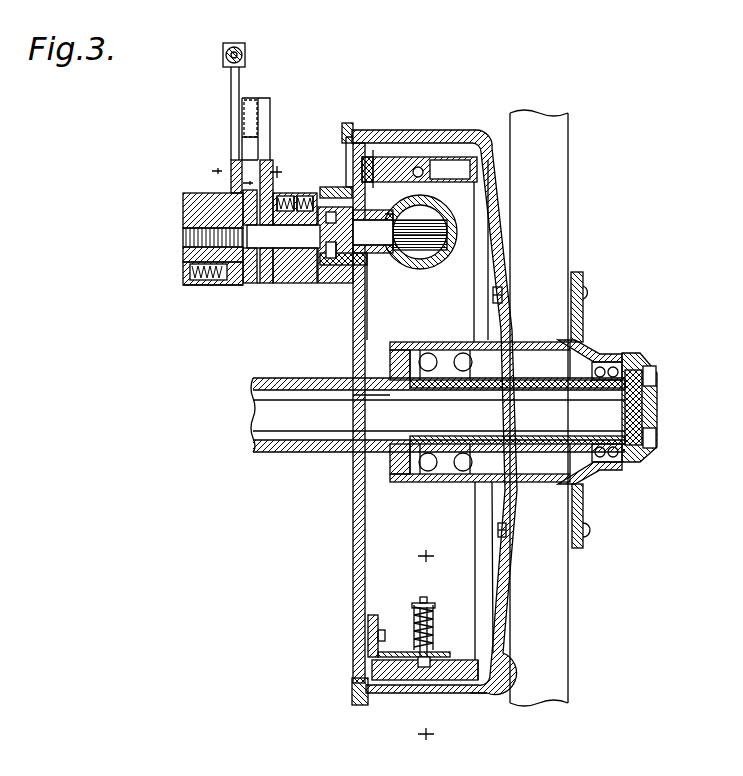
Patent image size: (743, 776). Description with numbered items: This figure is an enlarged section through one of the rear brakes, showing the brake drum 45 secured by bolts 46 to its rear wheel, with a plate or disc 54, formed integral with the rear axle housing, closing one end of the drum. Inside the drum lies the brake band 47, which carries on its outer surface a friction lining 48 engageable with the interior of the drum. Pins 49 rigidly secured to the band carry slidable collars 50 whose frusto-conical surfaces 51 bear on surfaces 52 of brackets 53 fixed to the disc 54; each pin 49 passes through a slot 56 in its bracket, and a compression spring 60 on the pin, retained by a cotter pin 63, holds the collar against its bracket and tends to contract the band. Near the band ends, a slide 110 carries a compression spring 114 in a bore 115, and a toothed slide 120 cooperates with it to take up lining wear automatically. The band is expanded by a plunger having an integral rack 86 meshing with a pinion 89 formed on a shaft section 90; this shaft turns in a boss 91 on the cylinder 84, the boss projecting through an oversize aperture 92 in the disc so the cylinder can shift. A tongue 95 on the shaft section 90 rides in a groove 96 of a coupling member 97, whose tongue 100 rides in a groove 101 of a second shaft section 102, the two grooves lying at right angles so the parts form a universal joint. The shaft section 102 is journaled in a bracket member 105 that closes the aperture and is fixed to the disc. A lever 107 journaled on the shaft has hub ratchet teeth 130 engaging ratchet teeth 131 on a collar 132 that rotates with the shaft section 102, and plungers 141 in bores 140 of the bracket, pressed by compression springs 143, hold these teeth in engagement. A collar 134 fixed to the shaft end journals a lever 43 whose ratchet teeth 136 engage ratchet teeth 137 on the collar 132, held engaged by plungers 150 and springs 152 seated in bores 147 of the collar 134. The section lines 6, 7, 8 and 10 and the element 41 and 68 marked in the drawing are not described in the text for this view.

The section line 6 is at (278, 320).
The section line 7 is at (250, 316).
The section line 8 is at (232, 313).
The section line 10 is at (426, 646).
The adjusting nut 41 is at (234, 43).
The lever 43 is at (231, 77).
The drum 45 is at (503, 213).
The bolts 46 is at (590, 294).
The brake band 47 is at (378, 680).
The brake or friction lining 48 is at (480, 690).
The pins 49 is at (433, 612).
The collars 50 is at (430, 650).
The frusto-conical surfaces 51 is at (420, 680).
The surfaces 52 is at (455, 680).
The brackets 53 is at (365, 632).
The plate or disc 54 is at (354, 514).
The slot 56 is at (404, 652).
The compression spring 60 is at (414, 612).
The cotter pin 63 is at (423, 597).
The washer 68 is at (430, 603).
The cylinder 84 is at (430, 247).
The rack 86 is at (430, 214).
The pinion 89 is at (420, 243).
The shaft section 90 is at (386, 258).
The boss 91 is at (388, 216).
The aperture 92 is at (368, 262).
The tongue 95 is at (356, 233).
The groove 96 is at (370, 215).
The coupling member 97 is at (384, 250).
The tongue 100 is at (333, 258).
The groove 101 is at (336, 258).
The shaft section 102 is at (304, 228).
The bracket member 105 is at (332, 187).
The lever 107 is at (270, 100).
The slide 110 is at (385, 170).
The compression spring 114 is at (418, 167).
The bore 115 is at (450, 166).
The slide 120 is at (374, 157).
The ratchet teeth 130 is at (266, 283).
The ratchet teeth 131 is at (255, 288).
The collar 132 is at (247, 272).
The collar 134 is at (188, 215).
The ratchet teeth 136 is at (186, 251).
The ratchet teeth 137 is at (236, 198).
The bores 140 is at (273, 210).
The plungers 141 is at (276, 196).
The compression springs 143 is at (305, 193).
The bores 147 is at (188, 262).
The plungers 150 is at (208, 285).
The springs 152 is at (192, 275).